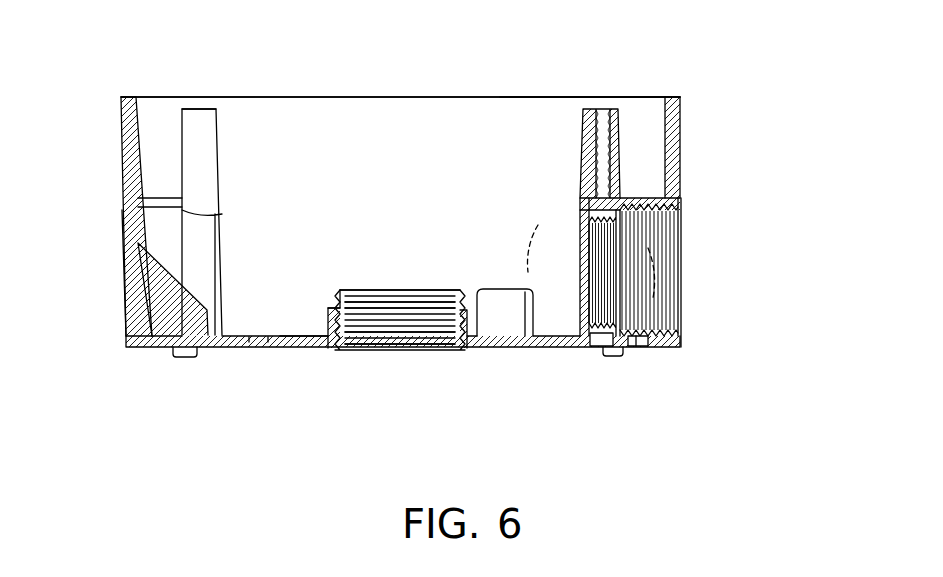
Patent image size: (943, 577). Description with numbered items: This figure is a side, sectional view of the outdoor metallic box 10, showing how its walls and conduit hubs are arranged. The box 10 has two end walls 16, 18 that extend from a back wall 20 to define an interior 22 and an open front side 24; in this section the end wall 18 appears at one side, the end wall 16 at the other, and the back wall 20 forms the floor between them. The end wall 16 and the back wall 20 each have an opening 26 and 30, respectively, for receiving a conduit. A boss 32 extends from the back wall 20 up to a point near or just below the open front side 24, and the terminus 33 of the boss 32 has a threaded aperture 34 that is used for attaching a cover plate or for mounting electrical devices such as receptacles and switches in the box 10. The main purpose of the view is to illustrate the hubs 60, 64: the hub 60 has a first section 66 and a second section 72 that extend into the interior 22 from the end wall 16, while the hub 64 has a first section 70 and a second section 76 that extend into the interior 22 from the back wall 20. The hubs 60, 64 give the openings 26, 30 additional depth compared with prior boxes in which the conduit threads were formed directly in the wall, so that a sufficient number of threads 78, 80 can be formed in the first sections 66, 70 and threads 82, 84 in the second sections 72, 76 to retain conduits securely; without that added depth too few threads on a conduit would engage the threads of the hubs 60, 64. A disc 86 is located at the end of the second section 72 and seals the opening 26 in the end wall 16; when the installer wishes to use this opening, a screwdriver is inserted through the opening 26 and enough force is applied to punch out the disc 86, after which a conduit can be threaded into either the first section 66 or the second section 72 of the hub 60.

The outdoor metallic box 10 is at (239, 60).
The end wall 16 is at (680, 180).
The end wall 18 is at (120, 157).
The back wall 20 is at (250, 345).
The interior 22 is at (416, 130).
The open front side 24 is at (530, 97).
The opening 26 is at (683, 268).
The opening 30 is at (423, 292).
The boss 32 is at (206, 148).
The terminus 33 is at (178, 112).
The threaded aperture 34 is at (200, 107).
The hub 60 is at (635, 341).
The hub 64 is at (300, 345).
The first section 66 is at (680, 225).
The first section 70 is at (350, 337).
The second section 72 is at (587, 215).
The second section 76 is at (332, 298).
The threads 78 is at (655, 300).
The threads 80 is at (385, 346).
The threads 82 is at (578, 263).
The threads 84 is at (375, 300).
The disc 86 is at (548, 347).